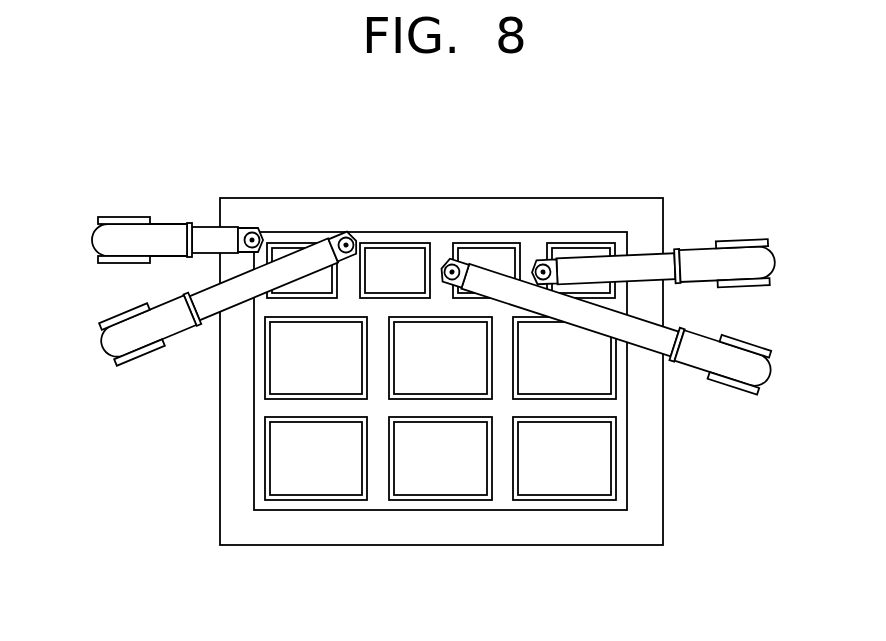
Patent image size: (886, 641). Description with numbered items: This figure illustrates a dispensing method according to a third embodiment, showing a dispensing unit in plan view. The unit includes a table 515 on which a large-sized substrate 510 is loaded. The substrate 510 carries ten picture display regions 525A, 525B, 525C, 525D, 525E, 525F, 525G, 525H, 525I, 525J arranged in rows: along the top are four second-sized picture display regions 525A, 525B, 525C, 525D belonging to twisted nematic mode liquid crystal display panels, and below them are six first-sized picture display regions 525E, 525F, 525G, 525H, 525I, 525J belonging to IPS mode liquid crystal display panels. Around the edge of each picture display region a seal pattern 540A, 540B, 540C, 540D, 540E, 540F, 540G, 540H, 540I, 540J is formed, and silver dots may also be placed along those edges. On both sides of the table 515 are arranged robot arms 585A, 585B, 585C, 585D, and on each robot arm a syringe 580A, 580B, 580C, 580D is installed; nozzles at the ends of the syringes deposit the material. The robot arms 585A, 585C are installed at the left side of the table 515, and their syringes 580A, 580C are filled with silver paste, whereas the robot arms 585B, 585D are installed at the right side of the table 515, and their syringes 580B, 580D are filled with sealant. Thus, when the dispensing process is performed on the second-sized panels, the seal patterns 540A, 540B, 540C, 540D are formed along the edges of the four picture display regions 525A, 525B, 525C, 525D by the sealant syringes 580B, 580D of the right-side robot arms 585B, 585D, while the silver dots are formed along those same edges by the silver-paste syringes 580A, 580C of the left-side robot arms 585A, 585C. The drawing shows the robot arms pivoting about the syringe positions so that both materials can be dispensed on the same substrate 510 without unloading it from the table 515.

The large-sized substrate 510 is at (627, 480).
The table 515 is at (663, 207).
The picture display region 525A is at (288, 256).
The picture display region 525B is at (397, 262).
The picture display region 525C is at (483, 262).
The picture display region 525D is at (578, 258).
The picture display region 525E is at (297, 365).
The picture display region 525F is at (422, 365).
The picture display region 525G is at (546, 365).
The picture display region 525H is at (297, 465).
The picture display region 525I is at (456, 465).
The picture display region 525J is at (546, 465).
The seal pattern 540A is at (300, 243).
The seal pattern 540B is at (414, 243).
The seal pattern 540C is at (503, 245).
The seal pattern 540D is at (610, 245).
The seal pattern 540E is at (347, 399).
The seal pattern 540F is at (473, 399).
The seal pattern 540G is at (597, 399).
The seal pattern 540H is at (298, 500).
The seal pattern 540I is at (428, 500).
The seal pattern 540J is at (557, 500).
The syringe 580A is at (250, 228).
The syringe 580B is at (547, 260).
The syringe 580C is at (348, 234).
The syringe 580D is at (456, 260).
The robot arm 585A is at (101, 238).
The robot arm 585B is at (776, 261).
The robot arm 585C is at (99, 347).
The robot arm 585D is at (776, 376).